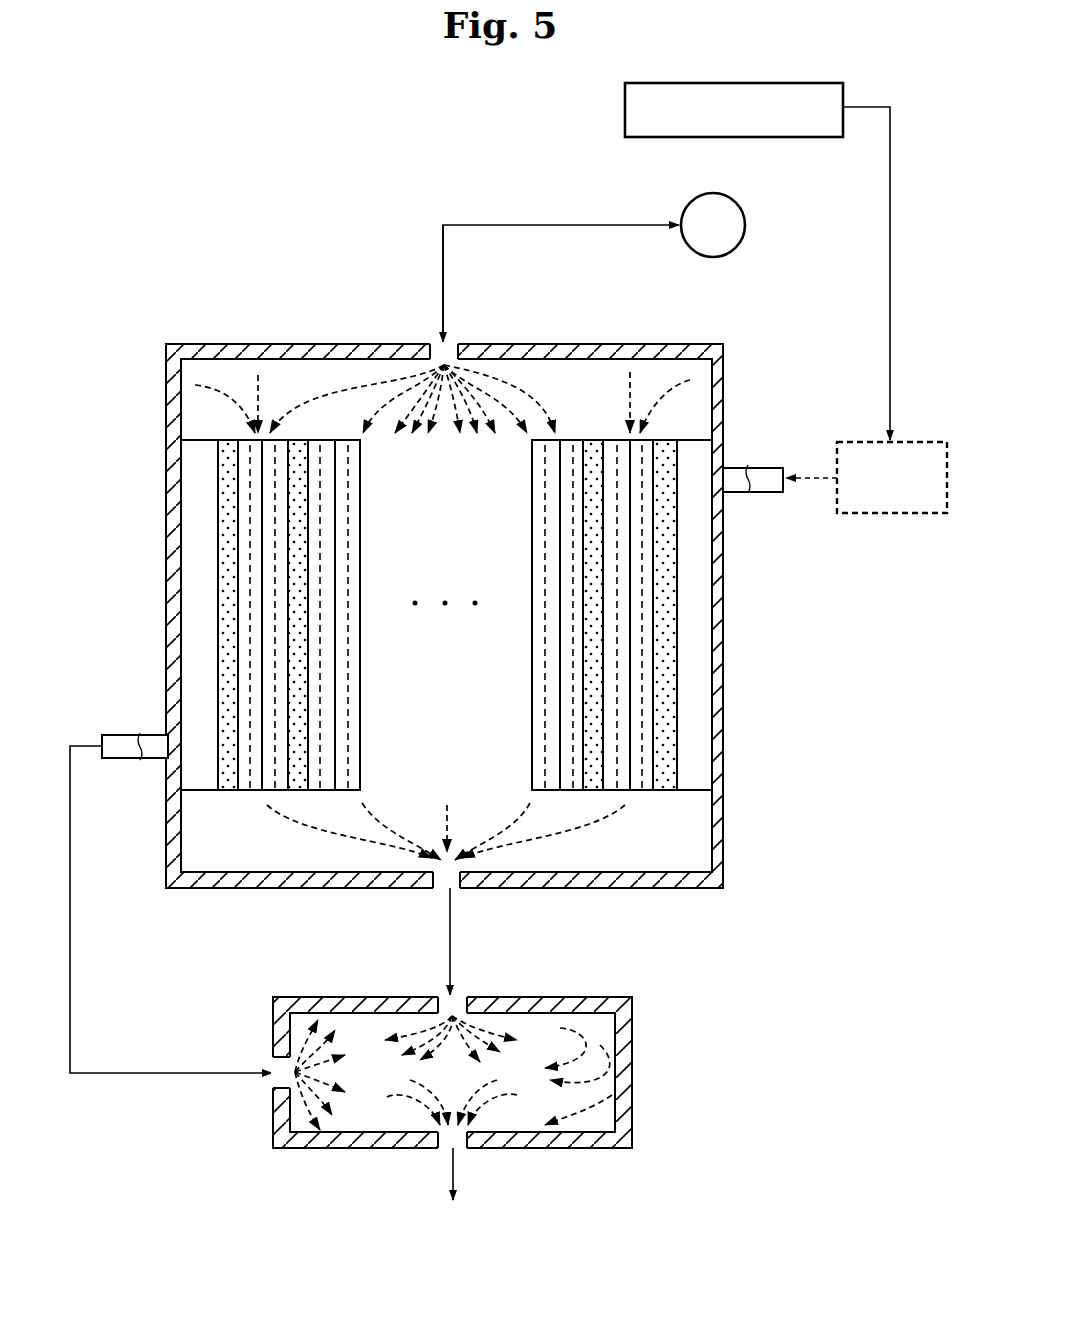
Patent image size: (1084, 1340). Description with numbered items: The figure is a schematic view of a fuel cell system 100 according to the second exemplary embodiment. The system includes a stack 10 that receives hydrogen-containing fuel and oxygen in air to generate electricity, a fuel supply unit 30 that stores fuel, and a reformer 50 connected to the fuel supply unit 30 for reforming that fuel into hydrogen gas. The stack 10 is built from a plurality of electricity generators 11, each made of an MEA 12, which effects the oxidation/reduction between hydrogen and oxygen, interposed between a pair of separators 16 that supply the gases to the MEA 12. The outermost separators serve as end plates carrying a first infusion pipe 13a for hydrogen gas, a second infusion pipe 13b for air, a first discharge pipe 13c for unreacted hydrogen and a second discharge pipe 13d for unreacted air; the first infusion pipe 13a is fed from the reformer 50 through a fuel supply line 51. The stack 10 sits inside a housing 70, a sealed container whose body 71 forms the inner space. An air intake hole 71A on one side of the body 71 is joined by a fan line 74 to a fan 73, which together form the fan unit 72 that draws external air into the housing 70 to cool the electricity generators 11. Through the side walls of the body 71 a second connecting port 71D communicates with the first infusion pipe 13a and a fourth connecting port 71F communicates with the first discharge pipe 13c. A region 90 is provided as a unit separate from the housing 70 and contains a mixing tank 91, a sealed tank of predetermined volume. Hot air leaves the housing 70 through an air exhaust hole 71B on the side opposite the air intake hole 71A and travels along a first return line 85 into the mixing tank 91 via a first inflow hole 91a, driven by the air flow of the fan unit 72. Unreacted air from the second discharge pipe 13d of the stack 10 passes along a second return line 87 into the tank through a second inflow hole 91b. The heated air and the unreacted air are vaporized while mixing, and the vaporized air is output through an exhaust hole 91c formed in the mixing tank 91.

The fuel cell system 100 is at (158, 242).
The stack 10 is at (446, 526).
The electricity generator 11 is at (305, 526).
The MEA 12 is at (298, 440).
The separator 16 is at (322, 440).
The fuel supply unit 30 is at (625, 105).
The reformer 50 is at (922, 440).
The fuel supply line 51 is at (812, 478).
The housing 70 is at (448, 616).
The body 71 is at (672, 344).
The air intake hole 71A is at (450, 342).
The air exhaust hole 71B is at (440, 890).
The second connecting port 71D is at (767, 466).
The fourth connecting port 71F is at (126, 755).
The first infusion pipe 13a is at (768, 467).
The second infusion pipe 13b is at (738, 468).
The first discharge pipe 13c is at (155, 759).
The second discharge pipe 13d is at (118, 759).
The fan unit 72 is at (596, 251).
The fan 73 is at (732, 199).
The fan line 74 is at (590, 228).
The first return line 85 is at (451, 925).
The second return line 87 is at (71, 980).
The region 90 is at (459, 1076).
The mixing tank 91 is at (532, 1148).
The first inflow hole 91a is at (458, 997).
The second inflow hole 91b is at (247, 1062).
The exhaust hole 91c is at (445, 1148).